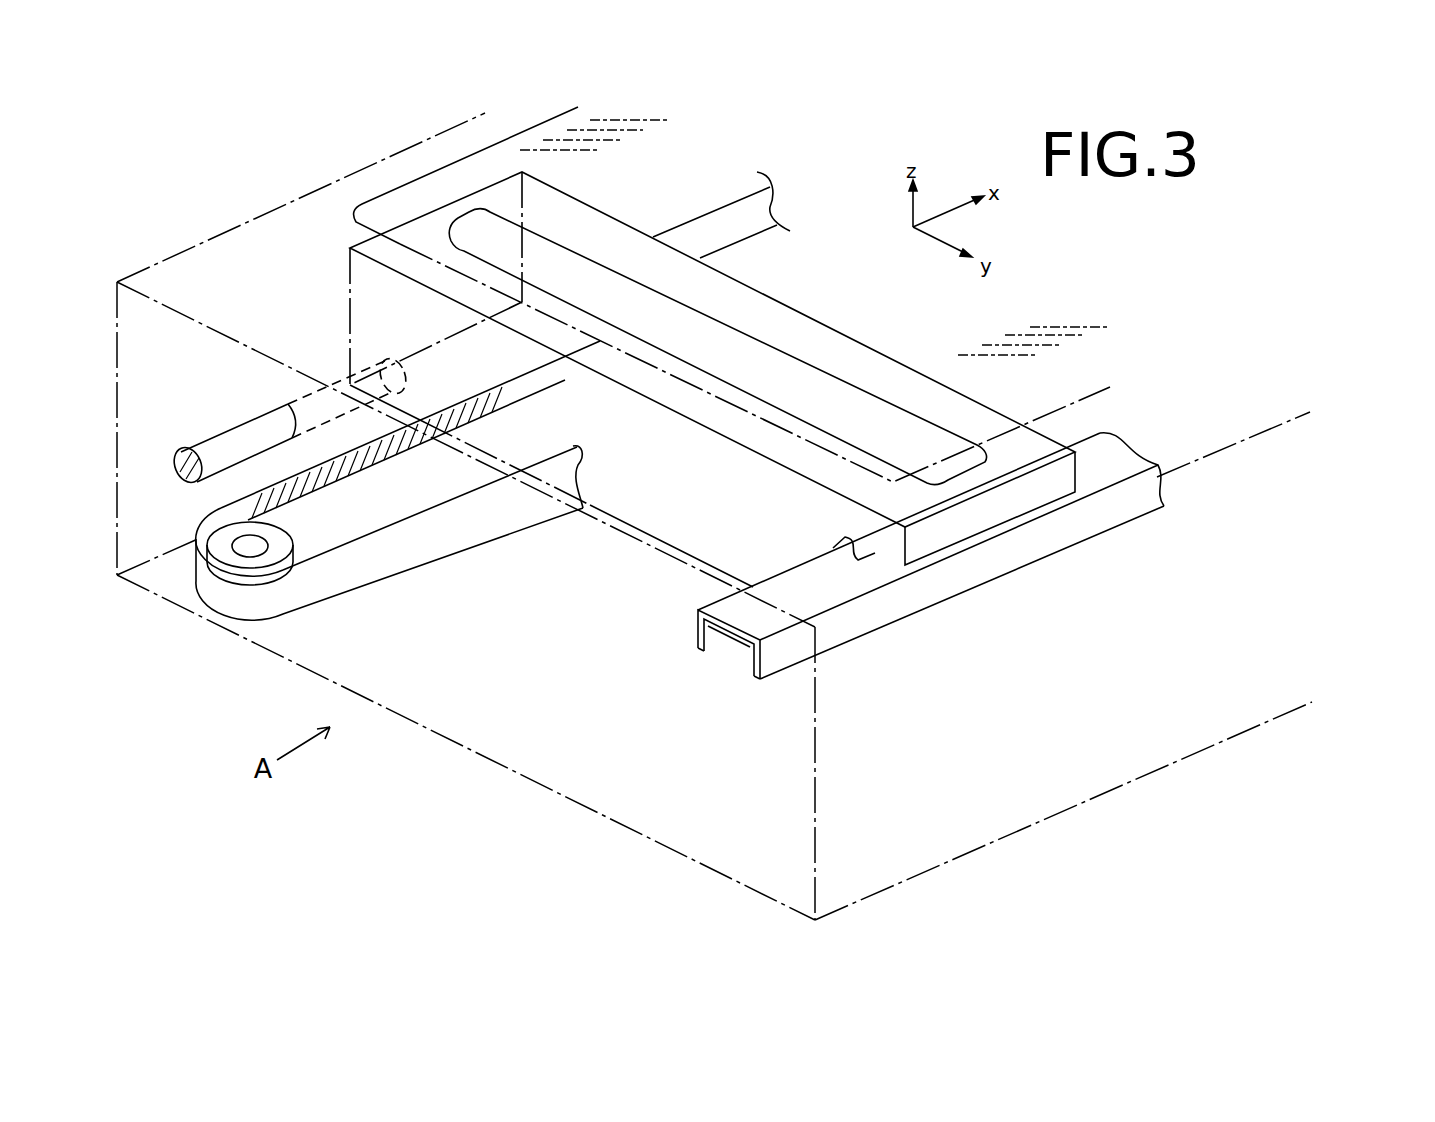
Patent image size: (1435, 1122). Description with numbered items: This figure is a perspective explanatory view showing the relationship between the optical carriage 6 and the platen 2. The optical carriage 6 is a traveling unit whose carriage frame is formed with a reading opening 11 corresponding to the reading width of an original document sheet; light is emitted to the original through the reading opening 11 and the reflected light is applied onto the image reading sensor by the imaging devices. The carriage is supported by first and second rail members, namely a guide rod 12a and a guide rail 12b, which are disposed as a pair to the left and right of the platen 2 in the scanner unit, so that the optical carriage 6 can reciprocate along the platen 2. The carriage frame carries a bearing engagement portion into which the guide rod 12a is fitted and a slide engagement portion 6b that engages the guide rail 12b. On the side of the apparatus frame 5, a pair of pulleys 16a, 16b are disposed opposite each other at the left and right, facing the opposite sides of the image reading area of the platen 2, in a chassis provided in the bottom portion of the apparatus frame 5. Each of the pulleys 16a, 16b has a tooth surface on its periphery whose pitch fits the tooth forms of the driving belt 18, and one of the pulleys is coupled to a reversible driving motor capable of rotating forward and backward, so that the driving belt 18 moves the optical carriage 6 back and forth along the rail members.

The apparatus frame 5 is at (340, 188).
The platen 2 is at (440, 186).
The optical carriage 6 is at (773, 303).
The slide engagement portion 6b is at (843, 557).
The reading opening 11 is at (806, 383).
The guide rod 12a is at (215, 442).
The guide rail 12b is at (787, 583).
The pulley 16a is at (270, 563).
The pulley 16b is at (304, 610).
The driving belt 18 is at (403, 557).